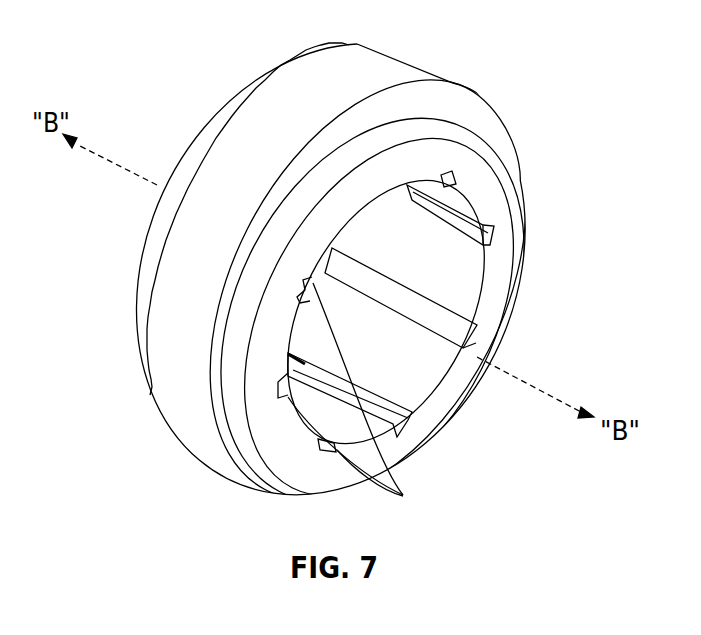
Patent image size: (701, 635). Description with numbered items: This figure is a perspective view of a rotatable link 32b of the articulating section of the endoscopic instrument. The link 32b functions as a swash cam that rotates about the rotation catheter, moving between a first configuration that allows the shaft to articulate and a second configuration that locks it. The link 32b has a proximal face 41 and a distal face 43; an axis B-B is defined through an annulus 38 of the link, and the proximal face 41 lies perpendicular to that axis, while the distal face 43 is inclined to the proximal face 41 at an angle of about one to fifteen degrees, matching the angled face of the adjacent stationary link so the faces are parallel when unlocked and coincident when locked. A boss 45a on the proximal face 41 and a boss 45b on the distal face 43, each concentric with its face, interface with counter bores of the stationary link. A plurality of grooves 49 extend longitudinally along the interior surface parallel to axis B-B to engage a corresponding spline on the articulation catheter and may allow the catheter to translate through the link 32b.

The rotatable link 32b is at (370, 290).
The annulus 38 is at (455, 290).
The proximal face 41 is at (491, 138).
The distal face 43 is at (286, 269).
The boss 45a is at (240, 400).
The boss 45b is at (138, 276).
The grooves 49 is at (457, 178).